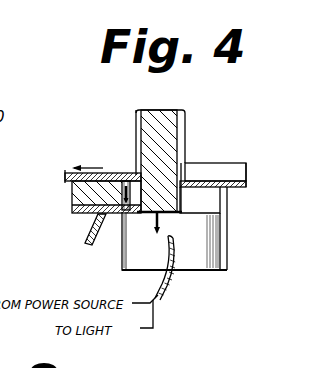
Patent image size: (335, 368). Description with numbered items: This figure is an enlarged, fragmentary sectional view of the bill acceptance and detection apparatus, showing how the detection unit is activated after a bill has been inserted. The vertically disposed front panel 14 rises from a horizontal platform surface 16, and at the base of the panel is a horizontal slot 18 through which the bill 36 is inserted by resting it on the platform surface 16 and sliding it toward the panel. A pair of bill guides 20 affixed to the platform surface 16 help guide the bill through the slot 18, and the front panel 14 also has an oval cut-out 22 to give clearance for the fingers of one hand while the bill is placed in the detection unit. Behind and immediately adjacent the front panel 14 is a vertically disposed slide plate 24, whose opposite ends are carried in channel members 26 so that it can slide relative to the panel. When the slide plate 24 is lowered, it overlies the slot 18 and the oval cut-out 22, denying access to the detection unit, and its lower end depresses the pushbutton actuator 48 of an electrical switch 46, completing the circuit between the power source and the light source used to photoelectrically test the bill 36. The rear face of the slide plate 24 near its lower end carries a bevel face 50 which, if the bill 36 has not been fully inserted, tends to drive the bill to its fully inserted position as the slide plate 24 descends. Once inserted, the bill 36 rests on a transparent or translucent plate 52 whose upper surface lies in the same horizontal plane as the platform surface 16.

The front panel 14 is at (186, 121).
The platform surface 16 is at (228, 191).
The horizontal slot 18 is at (187, 171).
The bill guides 20 is at (253, 162).
The oval cut-out 22 is at (187, 160).
The slide plate 24 is at (167, 148).
The channel members 26 is at (136, 121).
The bill 36 is at (65, 178).
The electrical switch 46 is at (200, 268).
The pushbutton actuator 48 is at (152, 217).
The bevel face 50 is at (130, 215).
The transparent or translucent plate 52 is at (126, 180).